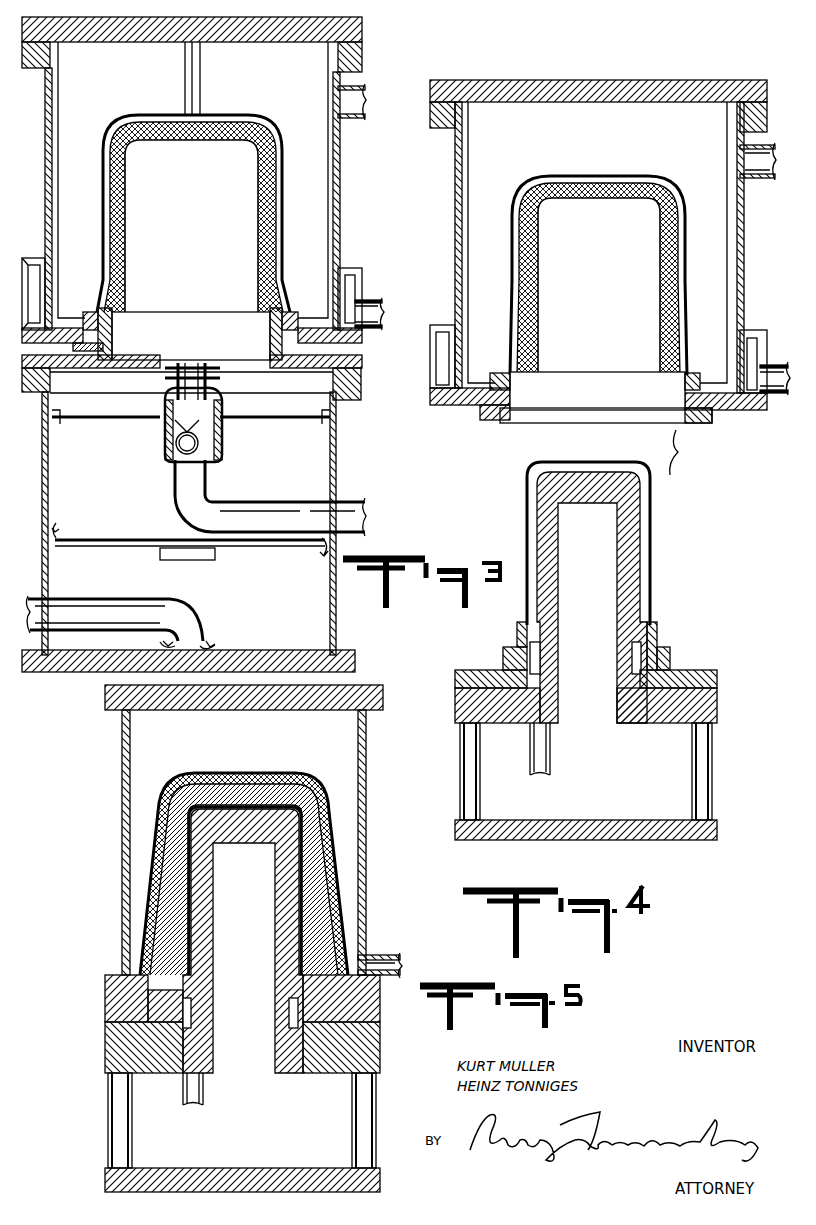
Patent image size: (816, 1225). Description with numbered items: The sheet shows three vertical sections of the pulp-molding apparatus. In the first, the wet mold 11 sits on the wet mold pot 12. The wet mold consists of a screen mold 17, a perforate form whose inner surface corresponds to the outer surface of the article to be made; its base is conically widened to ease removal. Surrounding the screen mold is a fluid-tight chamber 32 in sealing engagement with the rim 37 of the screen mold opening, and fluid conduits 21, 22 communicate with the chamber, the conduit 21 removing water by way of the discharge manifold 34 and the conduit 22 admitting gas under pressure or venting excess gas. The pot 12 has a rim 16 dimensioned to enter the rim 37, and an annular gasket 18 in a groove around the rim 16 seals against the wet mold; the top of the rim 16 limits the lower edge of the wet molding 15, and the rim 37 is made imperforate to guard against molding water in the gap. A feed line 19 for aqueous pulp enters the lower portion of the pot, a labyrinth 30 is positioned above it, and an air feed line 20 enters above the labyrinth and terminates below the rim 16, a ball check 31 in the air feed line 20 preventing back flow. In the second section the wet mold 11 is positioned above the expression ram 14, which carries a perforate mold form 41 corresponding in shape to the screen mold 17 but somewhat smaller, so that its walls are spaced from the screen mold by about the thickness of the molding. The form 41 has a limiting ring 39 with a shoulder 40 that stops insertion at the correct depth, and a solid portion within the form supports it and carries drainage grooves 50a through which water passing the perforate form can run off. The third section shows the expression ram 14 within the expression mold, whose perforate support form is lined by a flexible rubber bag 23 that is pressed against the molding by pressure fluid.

In FIG. 3, the wet mold 11 is at (68, 125).
In FIG. 4, the wet mold 11 is at (470, 190).
In FIG. 3, the wet mold pot 12 is at (58, 470).
In FIG. 4, the expression ram 14 is at (716, 704).
In FIG. 5, the expression ram 14 is at (372, 1058).
In FIG. 3, the wet molding 15 is at (122, 186).
In FIG. 4, the wet molding 15 is at (668, 272).
In FIG. 5, the wet molding 15 is at (318, 790).
In FIG. 3, the rim 16 is at (272, 330).
In FIG. 3, the screen mold 17 is at (108, 186).
In FIG. 4, the screen mold 17 is at (686, 275).
In FIG. 3, the annular gasket 18 is at (300, 375).
In FIG. 3, the feed line 19 is at (42, 598).
In FIG. 3, the air feed line 20 is at (342, 500).
In FIG. 3, the fluid conduit 21 is at (367, 330).
In FIG. 4, the fluid conduit 21 is at (770, 393).
In FIG. 3, the fluid conduit 22 is at (355, 104).
In FIG. 4, the fluid conduit 22 is at (754, 178).
In FIG. 5, the rubber bag 23 is at (320, 808).
In FIG. 3, the labyrinth 30 is at (260, 554).
In FIG. 3, the ball check 31 is at (170, 454).
In FIG. 3, the fluid-tight chamber 32 is at (340, 188).
In FIG. 4, the fluid-tight chamber 32 is at (745, 256).
In FIG. 3, the discharge manifold 34 is at (22, 302).
In FIG. 4, the discharge manifold 34 is at (438, 326).
In FIG. 3, the rim 37 is at (191, 336).
In FIG. 4, the limiting ring 39 is at (660, 662).
In FIG. 5, the limiting ring 39 is at (340, 1020).
In FIG. 4, the shoulder 40 is at (668, 650).
In FIG. 4, the perforate mold form 41 is at (650, 500).
In FIG. 5, the perforate mold form 41 is at (297, 878).
In FIG. 4, the drainage grooves 50a is at (655, 520).
In FIG. 5, the drainage grooves 50a is at (300, 902).